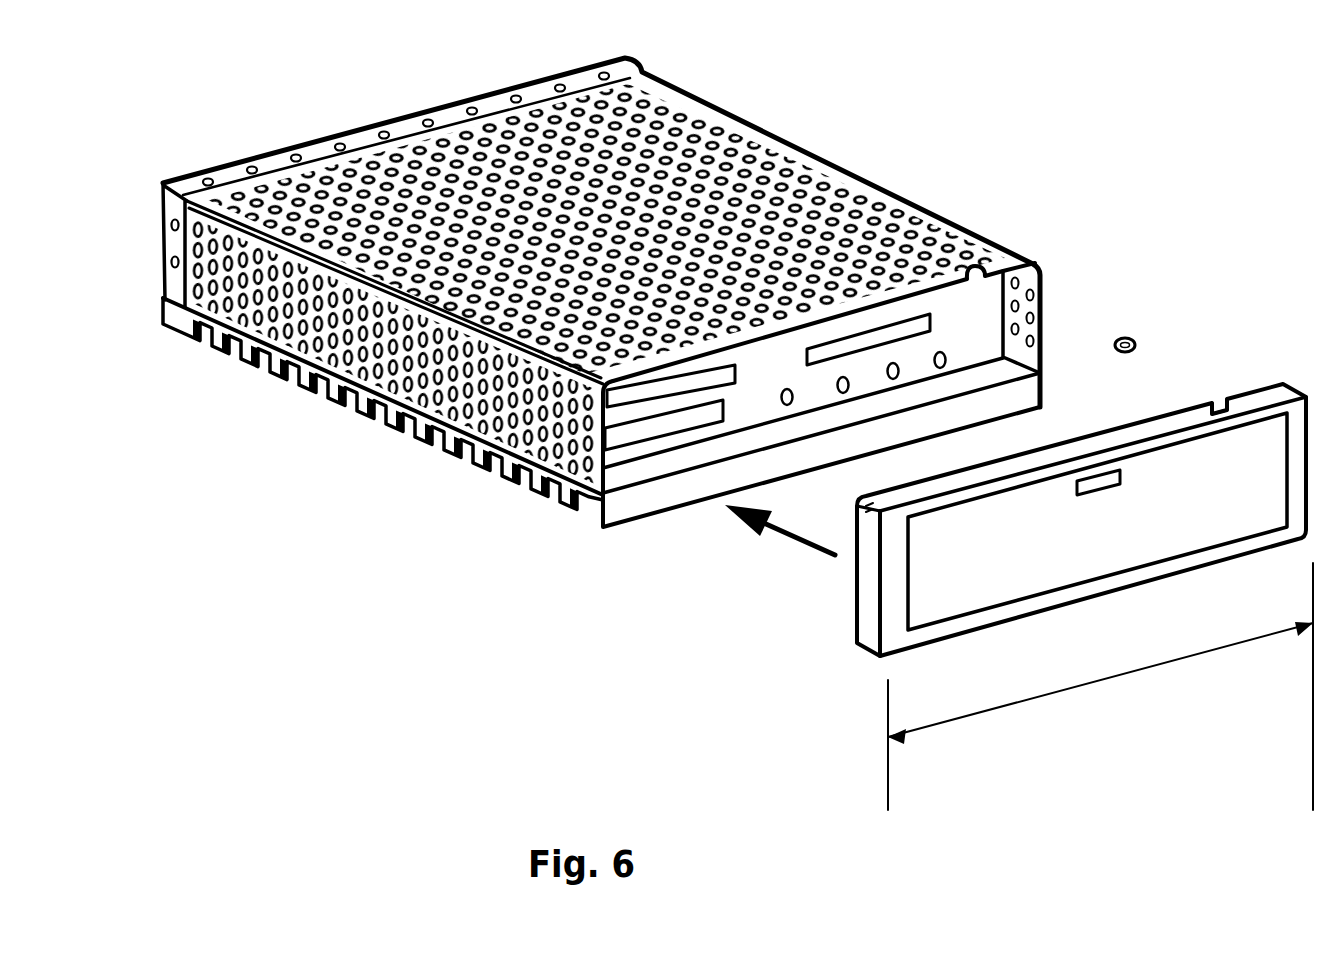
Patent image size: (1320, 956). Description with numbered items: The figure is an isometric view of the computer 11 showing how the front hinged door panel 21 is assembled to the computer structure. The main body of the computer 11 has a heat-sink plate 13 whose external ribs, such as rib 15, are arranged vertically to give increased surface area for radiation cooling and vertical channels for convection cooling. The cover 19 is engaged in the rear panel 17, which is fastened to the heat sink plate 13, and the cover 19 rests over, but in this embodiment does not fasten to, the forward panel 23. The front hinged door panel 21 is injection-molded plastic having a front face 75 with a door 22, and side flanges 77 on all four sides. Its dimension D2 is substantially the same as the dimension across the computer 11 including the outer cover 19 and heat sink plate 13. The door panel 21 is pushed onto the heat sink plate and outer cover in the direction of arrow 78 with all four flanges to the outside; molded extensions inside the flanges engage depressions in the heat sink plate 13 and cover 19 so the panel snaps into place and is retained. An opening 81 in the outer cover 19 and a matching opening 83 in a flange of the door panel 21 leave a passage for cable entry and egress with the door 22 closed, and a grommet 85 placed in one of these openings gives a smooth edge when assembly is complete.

The computer 11 is at (840, 92).
The heat-sink plate 13 is at (164, 318).
The rib 15 is at (457, 463).
The rear panel 17 is at (464, 97).
The cover 19 is at (695, 110).
The front hinged door panel 21 is at (857, 617).
The door 22 is at (982, 590).
The forward panel 23 is at (985, 310).
The front face 75 is at (903, 632).
The side flanges 77 is at (1082, 447).
The arrow 78 is at (852, 582).
The opening 81 is at (976, 270).
The matching opening 83 is at (1221, 397).
The grommet 85 is at (1130, 338).
The dimension D2 is at (1100, 686).